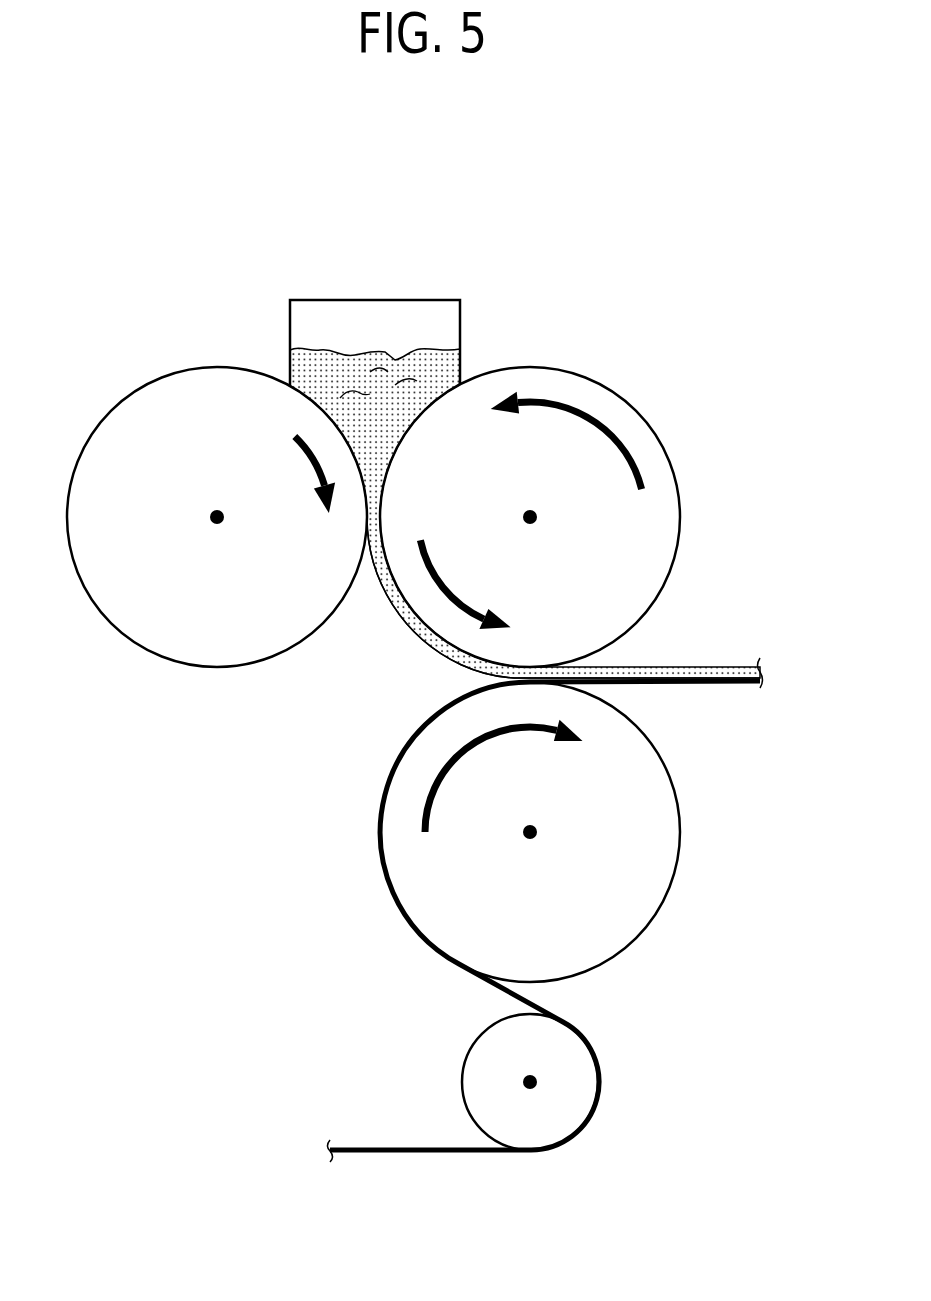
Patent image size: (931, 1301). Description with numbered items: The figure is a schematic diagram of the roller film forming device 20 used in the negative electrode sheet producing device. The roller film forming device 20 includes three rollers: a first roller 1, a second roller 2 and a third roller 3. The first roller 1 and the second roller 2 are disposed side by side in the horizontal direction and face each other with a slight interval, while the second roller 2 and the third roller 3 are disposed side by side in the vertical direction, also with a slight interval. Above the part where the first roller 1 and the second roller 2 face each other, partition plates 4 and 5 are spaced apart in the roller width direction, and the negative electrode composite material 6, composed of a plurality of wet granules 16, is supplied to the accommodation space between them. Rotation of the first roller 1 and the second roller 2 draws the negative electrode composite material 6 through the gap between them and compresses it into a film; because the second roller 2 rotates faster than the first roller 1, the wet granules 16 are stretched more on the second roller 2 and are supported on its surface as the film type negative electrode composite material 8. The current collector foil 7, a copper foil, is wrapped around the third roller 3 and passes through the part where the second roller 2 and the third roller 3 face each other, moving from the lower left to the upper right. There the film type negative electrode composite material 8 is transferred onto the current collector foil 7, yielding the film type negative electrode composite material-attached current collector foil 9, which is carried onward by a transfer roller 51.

The first roller 1 is at (196, 456).
The second roller 2 is at (509, 458).
The third roller 3 is at (511, 788).
The partition plate 4 is at (376, 310).
The partition plate 5 is at (392, 300).
The negative electrode composite material 6 is at (522, 456).
The wet granules 16 is at (317, 364).
The current collector foil 7 is at (385, 1148).
The film type negative electrode composite material 8 is at (435, 652).
The film type negative electrode composite material-attached current collector foil 9 is at (688, 667).
The roller film forming device 20 is at (666, 326).
The transfer roller 51 is at (475, 1057).